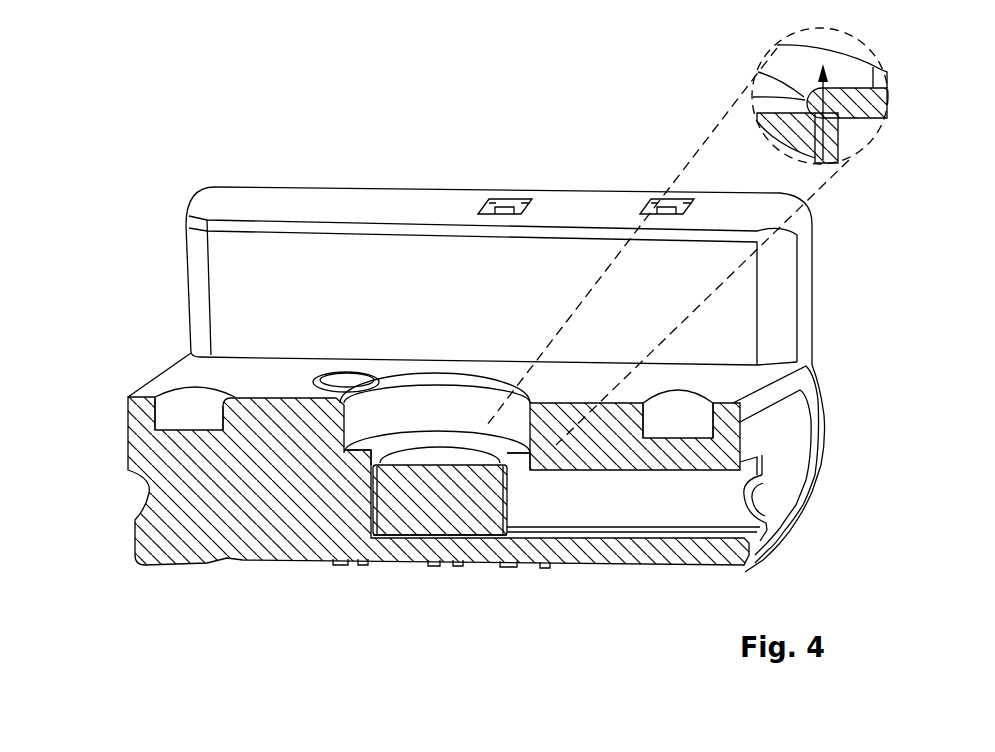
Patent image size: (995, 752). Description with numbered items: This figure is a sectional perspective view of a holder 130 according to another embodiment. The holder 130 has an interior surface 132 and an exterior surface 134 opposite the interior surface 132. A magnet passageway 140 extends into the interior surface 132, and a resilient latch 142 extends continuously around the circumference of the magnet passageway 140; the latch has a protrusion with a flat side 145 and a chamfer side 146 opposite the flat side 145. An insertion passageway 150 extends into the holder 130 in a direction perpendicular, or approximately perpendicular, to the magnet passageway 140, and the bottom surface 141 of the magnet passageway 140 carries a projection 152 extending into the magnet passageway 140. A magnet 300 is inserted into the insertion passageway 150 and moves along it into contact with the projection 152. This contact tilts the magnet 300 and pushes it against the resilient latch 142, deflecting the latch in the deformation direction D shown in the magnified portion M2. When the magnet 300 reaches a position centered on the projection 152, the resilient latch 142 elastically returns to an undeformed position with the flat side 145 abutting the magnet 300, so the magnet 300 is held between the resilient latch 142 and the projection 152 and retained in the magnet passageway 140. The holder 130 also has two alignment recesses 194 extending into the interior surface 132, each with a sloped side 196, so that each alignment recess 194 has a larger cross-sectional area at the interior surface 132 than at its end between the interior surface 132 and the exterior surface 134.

The holder 130 is at (178, 97).
The interior surface 132 is at (247, 367).
The exterior surface 134 is at (248, 565).
The magnet passageway 140 is at (437, 438).
The bottom surface 141 is at (392, 560).
The resilient latch 142 is at (350, 460).
The flat side 145 is at (832, 165).
The chamfer side 146 is at (805, 98).
The insertion passageway 150 is at (723, 512).
The projection 152 is at (447, 557).
The alignment recess 194 is at (203, 410).
The sloped side 196 is at (152, 427).
The magnet 300 is at (393, 505).
The deformation direction D is at (809, 97).
The magnified portion M2 is at (495, 425).